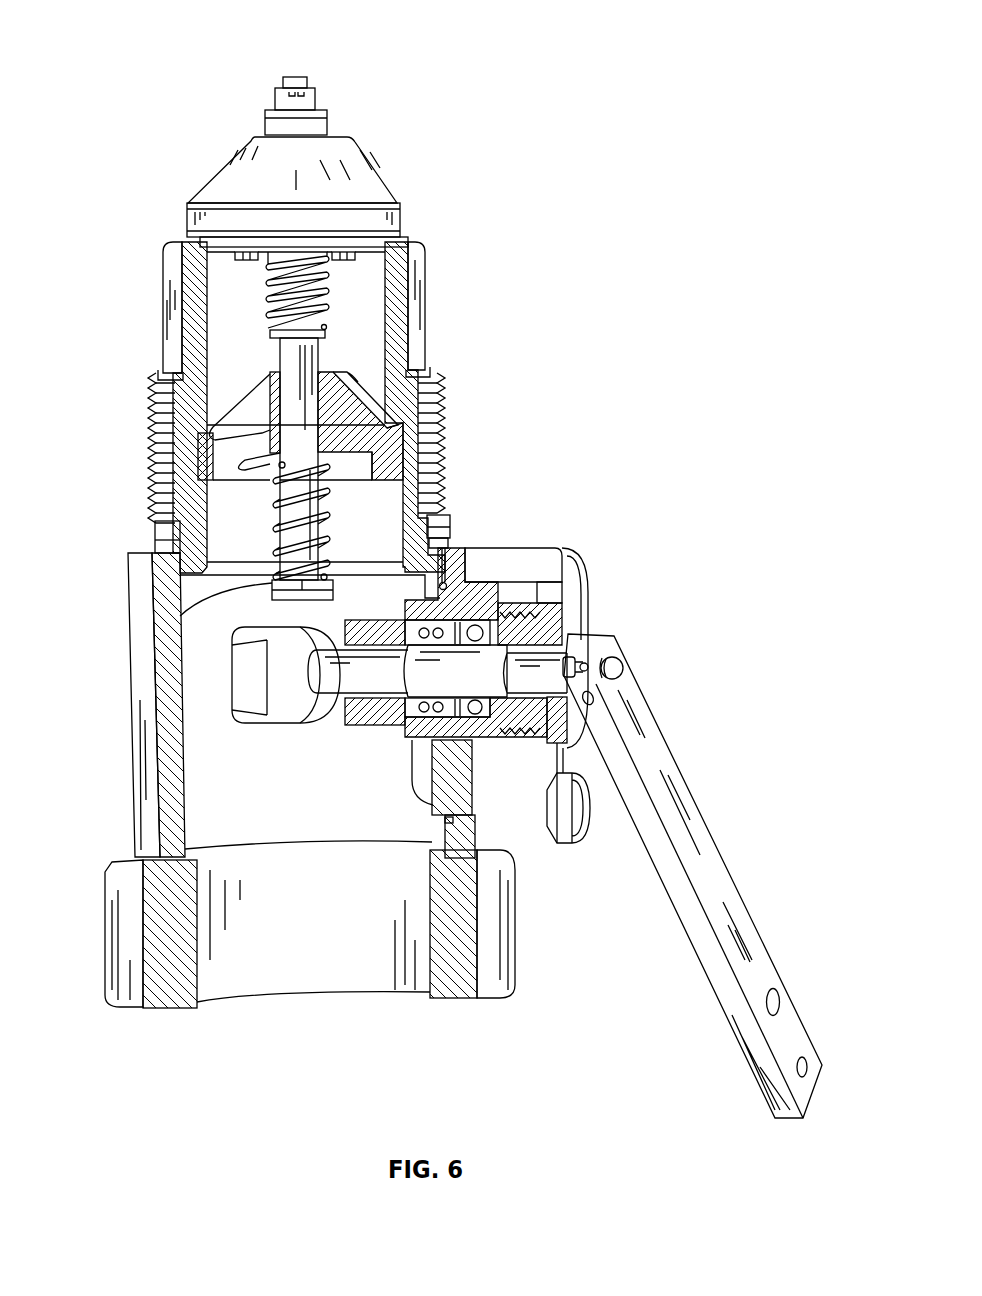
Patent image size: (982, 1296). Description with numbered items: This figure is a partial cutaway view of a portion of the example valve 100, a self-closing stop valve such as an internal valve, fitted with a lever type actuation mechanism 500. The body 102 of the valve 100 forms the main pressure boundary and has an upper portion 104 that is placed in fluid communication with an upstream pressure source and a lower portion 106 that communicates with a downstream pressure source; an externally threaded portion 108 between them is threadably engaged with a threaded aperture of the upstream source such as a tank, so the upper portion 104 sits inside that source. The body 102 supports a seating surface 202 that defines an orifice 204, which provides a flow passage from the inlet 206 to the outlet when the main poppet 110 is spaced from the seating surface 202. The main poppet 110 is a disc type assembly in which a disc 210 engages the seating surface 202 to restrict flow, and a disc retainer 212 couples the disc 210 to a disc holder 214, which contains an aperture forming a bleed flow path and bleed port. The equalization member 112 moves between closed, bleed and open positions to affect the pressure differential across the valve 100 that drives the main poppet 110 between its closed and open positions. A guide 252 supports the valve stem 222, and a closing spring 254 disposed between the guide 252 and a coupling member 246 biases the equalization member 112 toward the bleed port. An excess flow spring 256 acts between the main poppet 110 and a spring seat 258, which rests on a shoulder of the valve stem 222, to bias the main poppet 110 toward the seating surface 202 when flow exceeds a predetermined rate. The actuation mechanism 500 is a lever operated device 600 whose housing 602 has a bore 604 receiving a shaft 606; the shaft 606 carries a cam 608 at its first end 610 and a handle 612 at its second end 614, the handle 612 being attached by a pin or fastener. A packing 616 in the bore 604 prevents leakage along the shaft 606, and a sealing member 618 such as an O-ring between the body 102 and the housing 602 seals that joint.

The valve 100 is at (165, 58).
The body 102 is at (130, 732).
The first or upper portion 104 is at (175, 350).
The second or lower portion 106 is at (105, 932).
The externally threaded portion 108 is at (442, 392).
The main poppet 110 is at (372, 172).
The equalization member 112 is at (327, 117).
The seating surface 202 is at (410, 250).
The orifice 204 is at (195, 290).
The inlet 206 is at (457, 176).
The disc 210 is at (193, 240).
The disc retainer 212 is at (215, 262).
The disc holder 214 is at (237, 178).
The valve stem 222 is at (300, 355).
The coupling member 246 is at (267, 585).
The guide 252 is at (375, 480).
The closing spring 254 is at (270, 483).
The excess flow spring 256 is at (270, 305).
The spring seat 258 is at (268, 332).
The actuation mechanism 500 is at (594, 546).
The lever operated device 600 is at (523, 838).
The housing 602 is at (445, 582).
The bore 604 is at (458, 603).
The shaft 606 is at (470, 685).
The cam 608 is at (255, 652).
The first end 610 is at (345, 672).
The handle 612 is at (712, 858).
The second end 614 is at (553, 676).
The packing 616 is at (495, 600).
The sealing member 618 is at (453, 822).